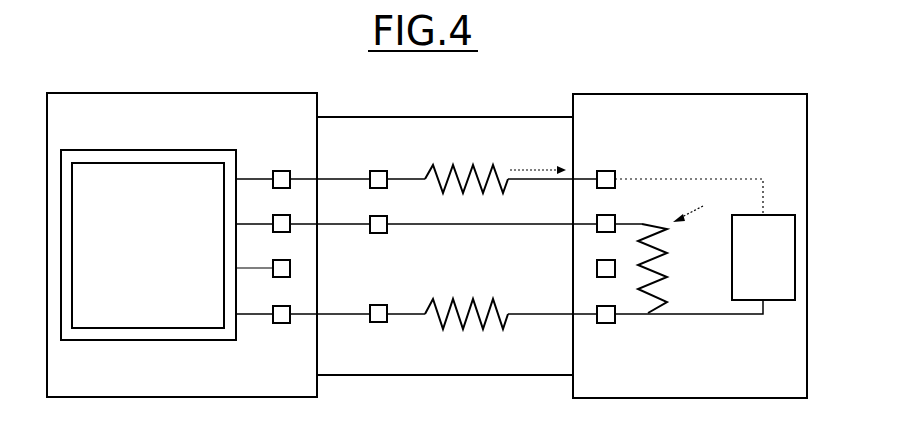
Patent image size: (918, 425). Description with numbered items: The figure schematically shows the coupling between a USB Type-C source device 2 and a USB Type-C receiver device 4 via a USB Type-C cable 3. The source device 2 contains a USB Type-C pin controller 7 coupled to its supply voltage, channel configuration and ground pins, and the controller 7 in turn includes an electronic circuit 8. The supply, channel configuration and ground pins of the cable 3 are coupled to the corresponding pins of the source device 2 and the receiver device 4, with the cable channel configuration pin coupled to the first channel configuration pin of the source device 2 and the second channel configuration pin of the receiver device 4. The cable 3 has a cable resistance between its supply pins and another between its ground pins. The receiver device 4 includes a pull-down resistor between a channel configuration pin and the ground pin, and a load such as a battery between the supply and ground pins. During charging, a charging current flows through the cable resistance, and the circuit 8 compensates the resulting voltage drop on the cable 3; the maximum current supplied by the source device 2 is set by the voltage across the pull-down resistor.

The USB Type-C source device 2 is at (266, 386).
The USB Type-C cable 3 is at (426, 117).
The USB Type-C receiver device 4 is at (789, 384).
The USB Type-C pin controller 7 is at (122, 150).
The electronic circuit 8 is at (188, 257).